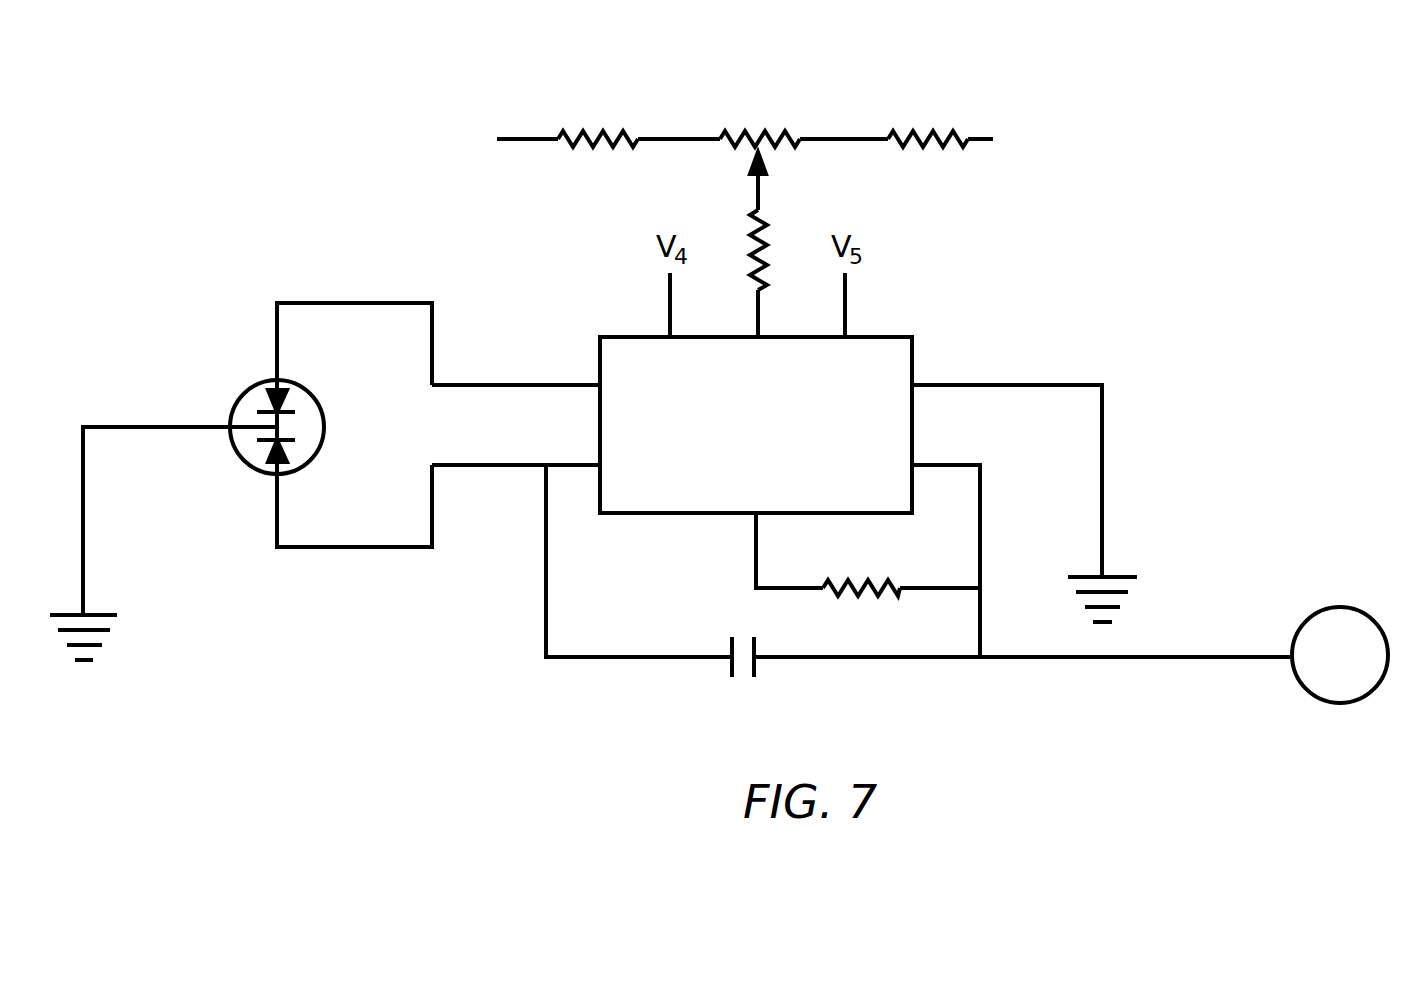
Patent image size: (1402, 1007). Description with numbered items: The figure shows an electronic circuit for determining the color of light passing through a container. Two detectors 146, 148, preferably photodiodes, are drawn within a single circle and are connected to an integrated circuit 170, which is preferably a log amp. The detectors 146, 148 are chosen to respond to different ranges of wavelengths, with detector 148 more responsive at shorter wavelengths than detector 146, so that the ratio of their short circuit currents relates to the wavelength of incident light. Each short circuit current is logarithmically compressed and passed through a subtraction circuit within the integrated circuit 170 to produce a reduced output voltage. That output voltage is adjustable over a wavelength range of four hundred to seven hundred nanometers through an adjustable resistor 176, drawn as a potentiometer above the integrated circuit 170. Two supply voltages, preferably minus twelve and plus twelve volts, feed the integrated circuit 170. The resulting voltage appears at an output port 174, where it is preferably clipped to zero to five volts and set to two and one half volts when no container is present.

The detector 146 is at (267, 460).
The detector 148 is at (270, 384).
The integrated circuit 170 is at (907, 337).
The output port 174 is at (1338, 608).
The adjustable resistor 176 is at (777, 134).